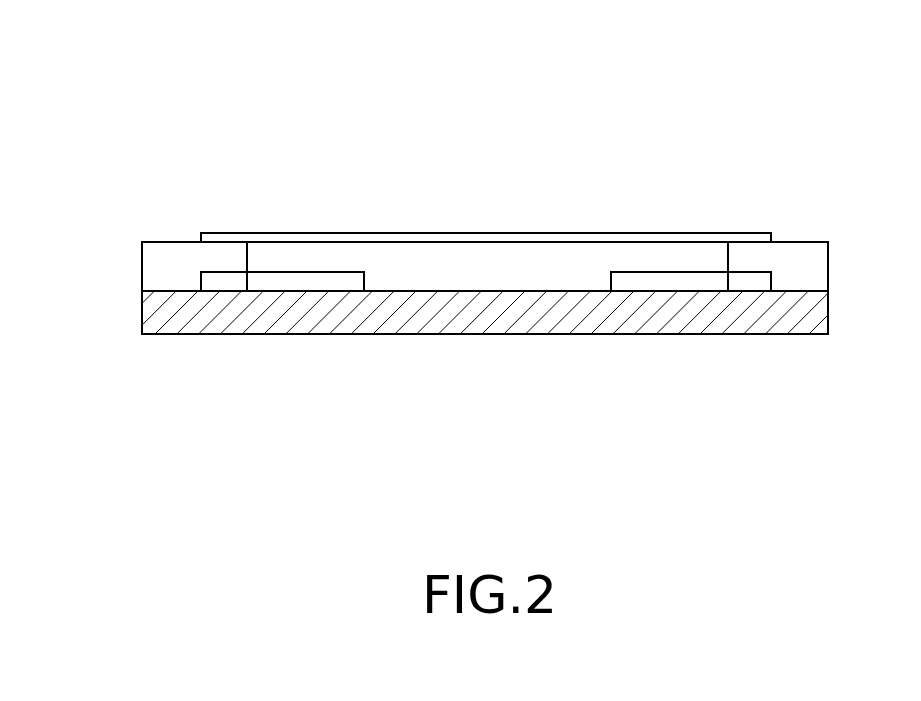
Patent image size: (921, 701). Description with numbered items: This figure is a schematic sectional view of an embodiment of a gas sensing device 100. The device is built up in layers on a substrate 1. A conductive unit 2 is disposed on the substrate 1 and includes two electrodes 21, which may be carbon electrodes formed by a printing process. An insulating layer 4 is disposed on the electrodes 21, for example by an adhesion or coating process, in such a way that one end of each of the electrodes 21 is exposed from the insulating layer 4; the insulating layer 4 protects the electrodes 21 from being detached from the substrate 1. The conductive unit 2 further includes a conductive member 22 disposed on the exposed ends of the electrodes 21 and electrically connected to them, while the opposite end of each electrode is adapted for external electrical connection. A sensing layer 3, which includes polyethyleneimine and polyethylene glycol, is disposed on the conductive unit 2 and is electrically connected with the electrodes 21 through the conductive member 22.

The gas sensing device 100 is at (792, 118).
The substrate 1 is at (170, 307).
The conductive unit 2 is at (486, 394).
The electrodes 21 is at (313, 282).
The conductive member 22 is at (487, 332).
The sensing layer 3 is at (556, 238).
The insulating layer 4 is at (188, 260).